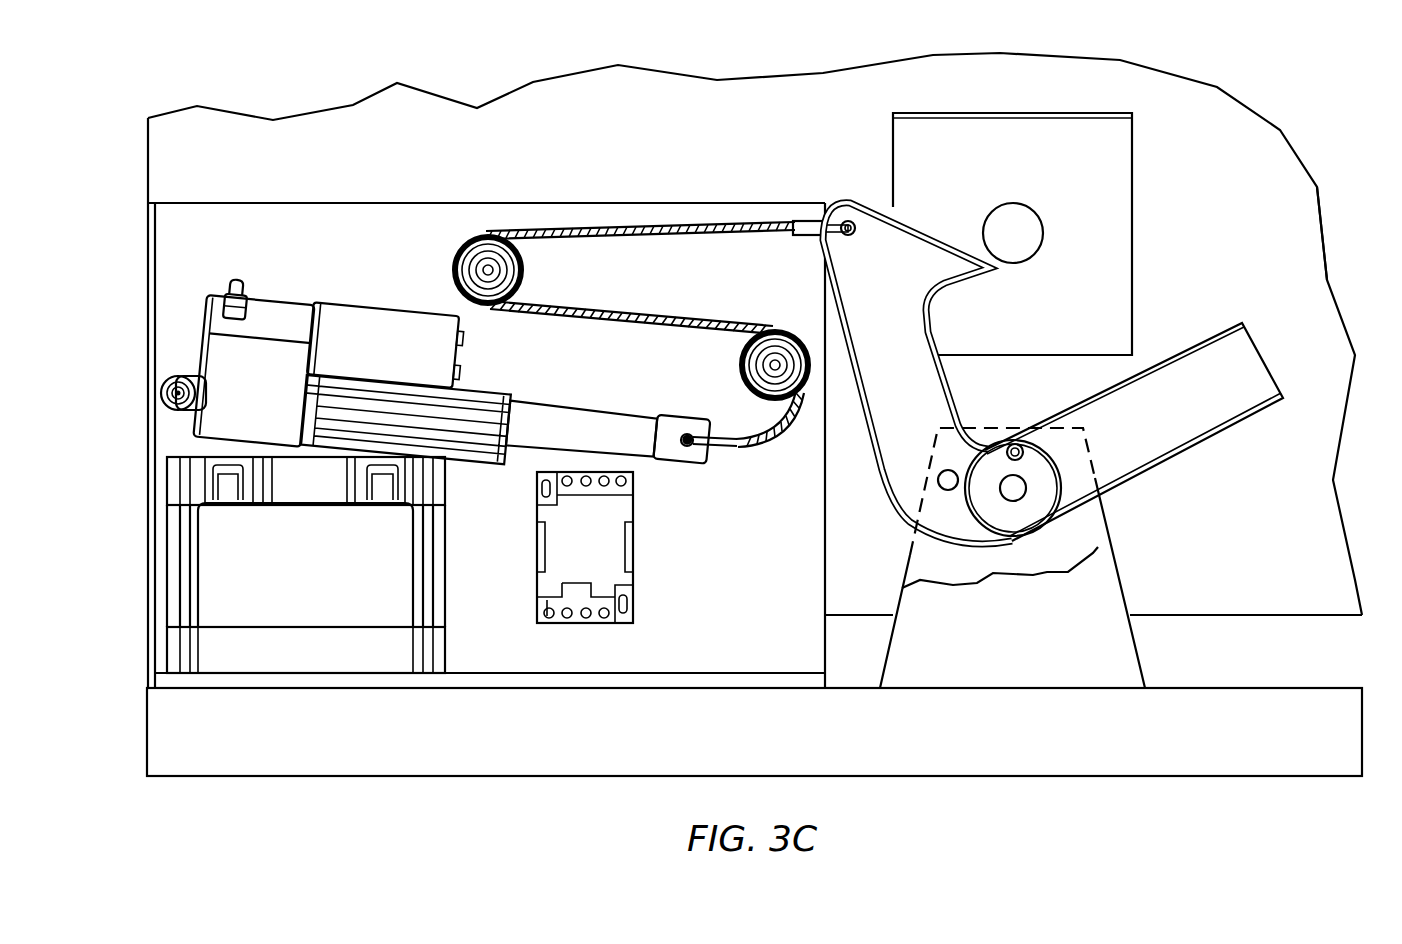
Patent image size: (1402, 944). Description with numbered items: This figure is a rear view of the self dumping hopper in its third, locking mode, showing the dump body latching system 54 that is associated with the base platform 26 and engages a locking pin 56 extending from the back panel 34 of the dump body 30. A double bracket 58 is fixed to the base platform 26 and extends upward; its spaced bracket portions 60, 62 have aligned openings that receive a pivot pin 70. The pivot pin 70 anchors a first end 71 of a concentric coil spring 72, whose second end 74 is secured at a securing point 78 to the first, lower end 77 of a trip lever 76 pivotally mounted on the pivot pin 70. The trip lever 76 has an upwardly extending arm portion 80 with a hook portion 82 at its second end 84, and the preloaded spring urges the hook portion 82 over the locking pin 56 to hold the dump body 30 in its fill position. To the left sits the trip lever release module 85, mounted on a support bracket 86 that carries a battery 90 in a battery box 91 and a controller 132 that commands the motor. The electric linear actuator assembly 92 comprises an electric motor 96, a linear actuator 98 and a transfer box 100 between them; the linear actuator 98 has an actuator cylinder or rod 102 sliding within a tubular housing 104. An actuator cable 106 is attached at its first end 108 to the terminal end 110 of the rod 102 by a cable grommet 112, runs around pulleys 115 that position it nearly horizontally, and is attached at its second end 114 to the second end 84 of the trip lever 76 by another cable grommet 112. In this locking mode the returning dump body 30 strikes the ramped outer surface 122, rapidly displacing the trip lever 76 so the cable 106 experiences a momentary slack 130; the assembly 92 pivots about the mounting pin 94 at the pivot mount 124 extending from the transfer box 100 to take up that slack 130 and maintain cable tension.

The base platform 26 is at (1288, 746).
The dump body 30 is at (1283, 133).
The back panel 34 is at (1282, 207).
The dump body latching system 54 is at (240, 192).
The locking pin 56 is at (1015, 233).
The double bracket 58 is at (1140, 640).
The bracket portion 60 is at (1095, 535).
The bracket portion 62 is at (1100, 575).
The pivot pin 70 is at (1013, 495).
The first end of concentric coil spring 71 is at (1050, 466).
The concentric coil spring 72 is at (1066, 485).
The second end of concentric coil spring 74 is at (932, 493).
The trip lever 76 is at (957, 413).
The first, lower end of trip lever 77 is at (947, 515).
The securing point 78 is at (933, 480).
The upwardly extending arm portion 80 is at (881, 380).
The hook portion 82 is at (982, 267).
The second end of trip lever 84 is at (872, 200).
The trip lever release module 85 is at (197, 270).
The support bracket 86 is at (771, 663).
The battery 90 is at (210, 555).
The battery box 91 is at (212, 650).
The electric linear actuator assembly 92 is at (200, 320).
The mounting pin 94 is at (165, 397).
The electric motor 96 is at (367, 325).
The linear actuator 98 is at (353, 440).
The transfer box 100 is at (237, 373).
The actuator cylinder or rod 102 is at (577, 410).
The tubular housing 104 is at (467, 445).
The actuator cable 106 is at (632, 224).
The first end of actuator cable 108 is at (750, 440).
The terminal end of actuator rod 110 is at (670, 430).
The cable grommet 112 is at (820, 215).
The second end of actuator cable 114 is at (758, 222).
The pulleys 115 is at (477, 252).
The ramped outer surface 122 is at (913, 222).
The pivot mount 124 is at (188, 403).
The cable slack 130 is at (787, 428).
The controller 132 is at (633, 548).